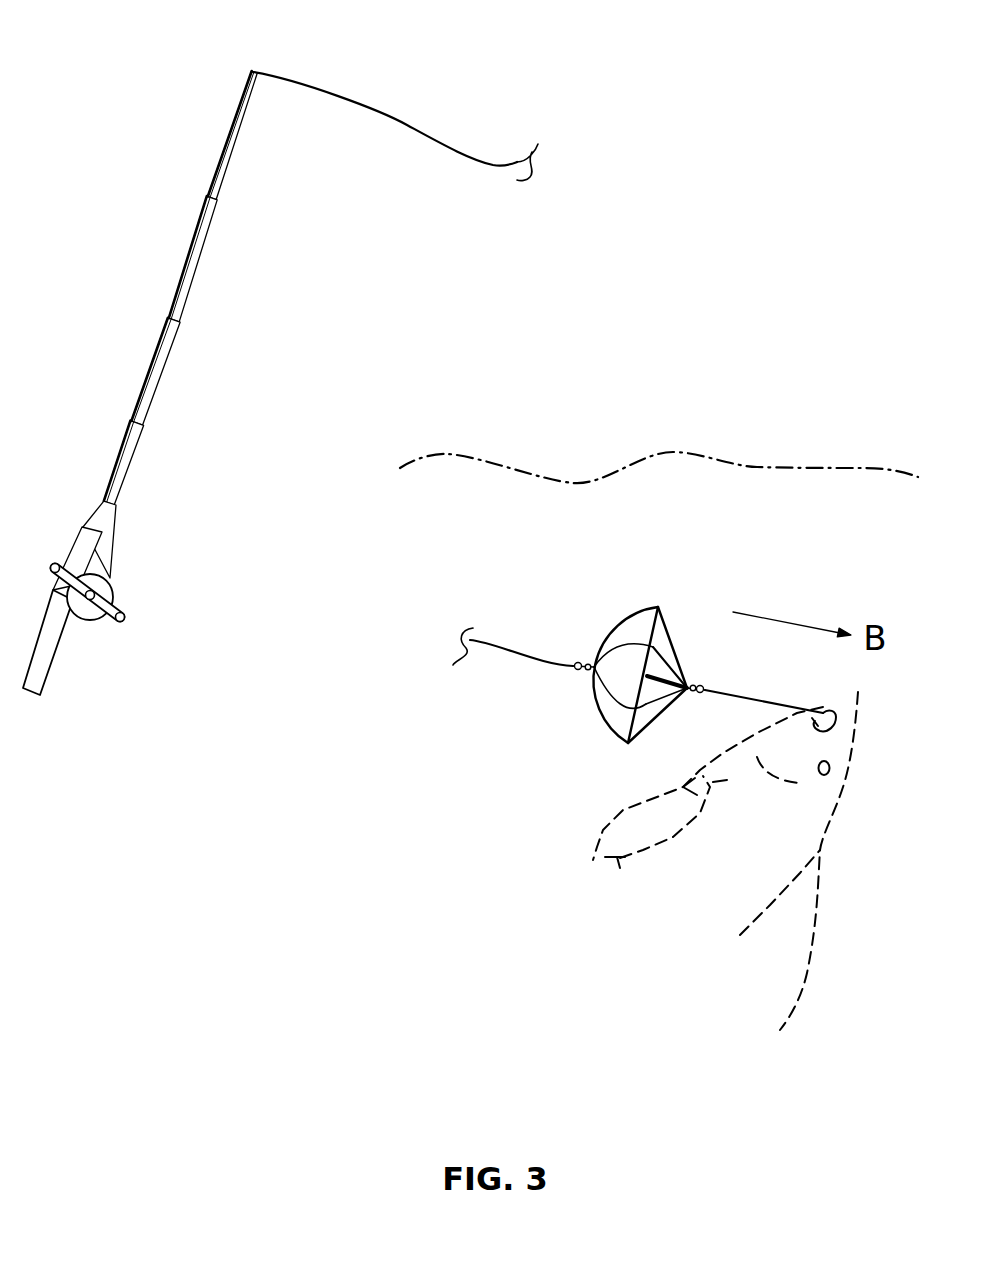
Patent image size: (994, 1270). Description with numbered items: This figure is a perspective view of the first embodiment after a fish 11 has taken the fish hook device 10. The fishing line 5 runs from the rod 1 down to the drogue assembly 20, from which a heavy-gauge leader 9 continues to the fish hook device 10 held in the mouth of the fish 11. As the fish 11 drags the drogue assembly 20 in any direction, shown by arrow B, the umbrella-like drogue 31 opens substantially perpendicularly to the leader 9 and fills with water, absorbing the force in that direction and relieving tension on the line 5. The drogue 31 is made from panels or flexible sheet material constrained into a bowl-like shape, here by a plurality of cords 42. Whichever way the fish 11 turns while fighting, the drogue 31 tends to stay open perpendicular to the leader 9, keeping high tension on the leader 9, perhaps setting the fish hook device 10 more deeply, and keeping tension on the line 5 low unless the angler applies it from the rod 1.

The rod 1 is at (238, 112).
The fishing line 5 is at (407, 125).
The leader 9 is at (735, 699).
The fish hook device 10 is at (836, 735).
The fish 11 is at (770, 867).
The drogue assembly 20 is at (562, 592).
The drogue 31 is at (597, 722).
The cords 42 is at (677, 645).